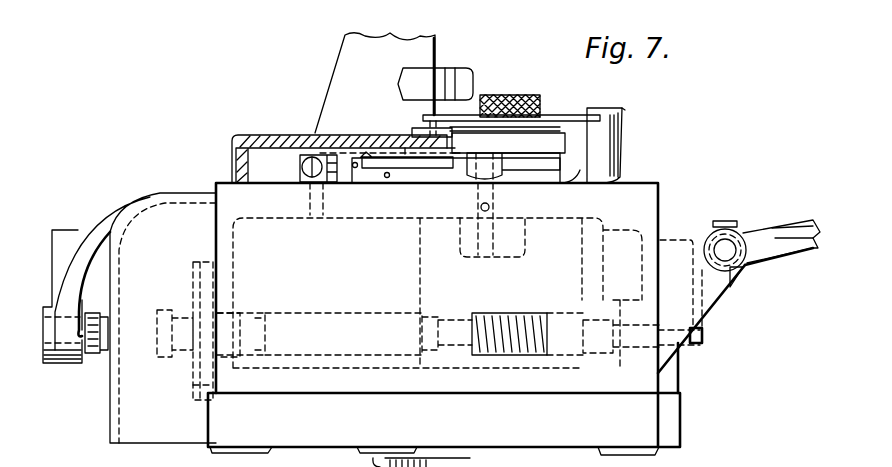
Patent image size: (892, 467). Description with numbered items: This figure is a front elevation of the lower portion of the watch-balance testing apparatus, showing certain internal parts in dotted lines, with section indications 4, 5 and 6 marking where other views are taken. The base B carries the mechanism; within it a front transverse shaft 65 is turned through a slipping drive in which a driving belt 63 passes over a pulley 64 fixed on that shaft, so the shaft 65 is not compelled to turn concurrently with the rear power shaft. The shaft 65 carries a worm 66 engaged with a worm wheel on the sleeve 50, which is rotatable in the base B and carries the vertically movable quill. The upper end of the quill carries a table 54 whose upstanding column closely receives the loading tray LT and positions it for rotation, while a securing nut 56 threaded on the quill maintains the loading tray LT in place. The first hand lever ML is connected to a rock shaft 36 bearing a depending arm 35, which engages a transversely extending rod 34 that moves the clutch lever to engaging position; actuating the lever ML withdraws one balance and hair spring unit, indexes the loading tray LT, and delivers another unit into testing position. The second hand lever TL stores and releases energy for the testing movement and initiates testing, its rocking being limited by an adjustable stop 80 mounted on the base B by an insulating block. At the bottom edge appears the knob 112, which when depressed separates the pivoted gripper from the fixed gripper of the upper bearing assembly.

The section line 4- 4 is at (305, 33).
The section line 5- 5 is at (160, 132).
The section line 6- 6 is at (44, 255).
The securing nut 56 is at (527, 92).
The table 54 is at (508, 141).
The sleeve 50 is at (513, 165).
The adjustable stop 80 is at (300, 167).
The loading tray LT is at (572, 112).
The second hand lever TL is at (620, 127).
The driving belt 63 is at (193, 288).
The pulley 64 is at (193, 388).
The front transverse shaft 65 is at (450, 323).
The worm 66 is at (522, 313).
The rock shaft 36 is at (711, 319).
The depending arm 35 is at (702, 332).
The rod 34 is at (683, 350).
The first hand lever ML is at (802, 247).
The base B is at (673, 418).
The knob 112 is at (470, 462).